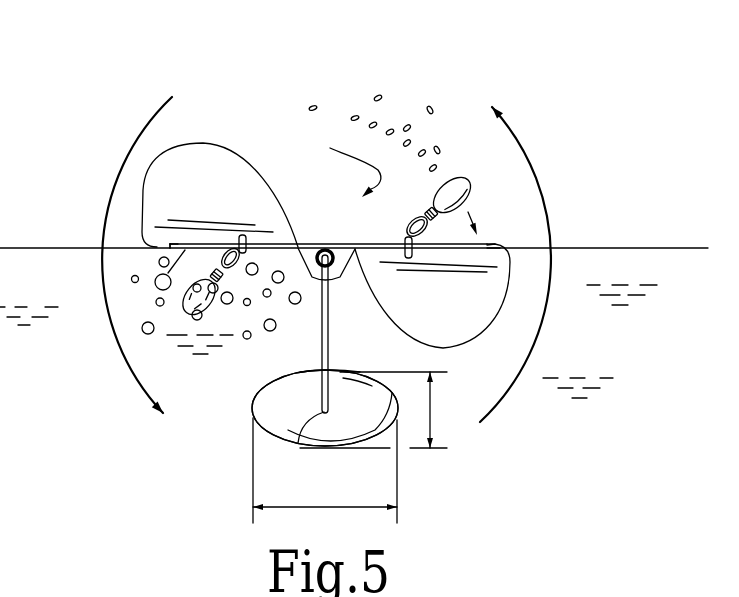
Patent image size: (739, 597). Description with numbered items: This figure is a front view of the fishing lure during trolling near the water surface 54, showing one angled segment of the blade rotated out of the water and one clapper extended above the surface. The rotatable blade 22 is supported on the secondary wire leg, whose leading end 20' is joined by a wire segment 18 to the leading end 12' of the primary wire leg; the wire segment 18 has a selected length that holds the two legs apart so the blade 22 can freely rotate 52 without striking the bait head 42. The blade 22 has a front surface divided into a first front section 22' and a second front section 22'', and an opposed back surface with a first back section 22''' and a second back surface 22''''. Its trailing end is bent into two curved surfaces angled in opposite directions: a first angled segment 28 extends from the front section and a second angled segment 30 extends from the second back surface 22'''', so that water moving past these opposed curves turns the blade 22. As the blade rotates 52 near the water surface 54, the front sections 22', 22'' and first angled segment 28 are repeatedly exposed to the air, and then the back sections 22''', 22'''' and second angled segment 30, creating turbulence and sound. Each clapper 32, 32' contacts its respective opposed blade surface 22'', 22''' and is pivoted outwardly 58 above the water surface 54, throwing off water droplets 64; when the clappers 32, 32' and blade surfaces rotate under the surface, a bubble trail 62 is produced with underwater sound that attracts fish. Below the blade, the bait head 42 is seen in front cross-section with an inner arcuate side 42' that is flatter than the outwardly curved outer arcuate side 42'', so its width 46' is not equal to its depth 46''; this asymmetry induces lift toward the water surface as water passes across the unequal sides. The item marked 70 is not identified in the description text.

The rotatable blade 22 is at (328, 135).
The first front section of the blade 22' is at (122, 205).
The second front section of the blade 22'' is at (547, 216).
The first back section of the blade 22''' is at (110, 263).
The second back surface of the blade 22'''' is at (535, 279).
The first angled segment 28 is at (214, 199).
The second angled segment 30 is at (456, 314).
The leading end of the secondary wire leg 20' is at (320, 224).
The wire segment 18 is at (330, 302).
The leading end of the primary wire leg 12' is at (325, 417).
The bait head 42 is at (281, 417).
The inner arcuate side 42' is at (339, 352).
The outer arcuate side 42'' is at (296, 452).
The width of the enlarged mid-portion 46' is at (397, 410).
The depth of the enlarged mid-portion 46'' is at (325, 480).
The clapper 32 is at (446, 190).
The clapper 32' is at (159, 284).
The blade rotation 52 is at (122, 355).
The water surface 54 is at (633, 248).
The outward pivoting of the clapper 58 is at (344, 161).
The bubble trail 62 is at (293, 305).
The water droplets 64 is at (405, 125).
The container 70 is at (211, 591).